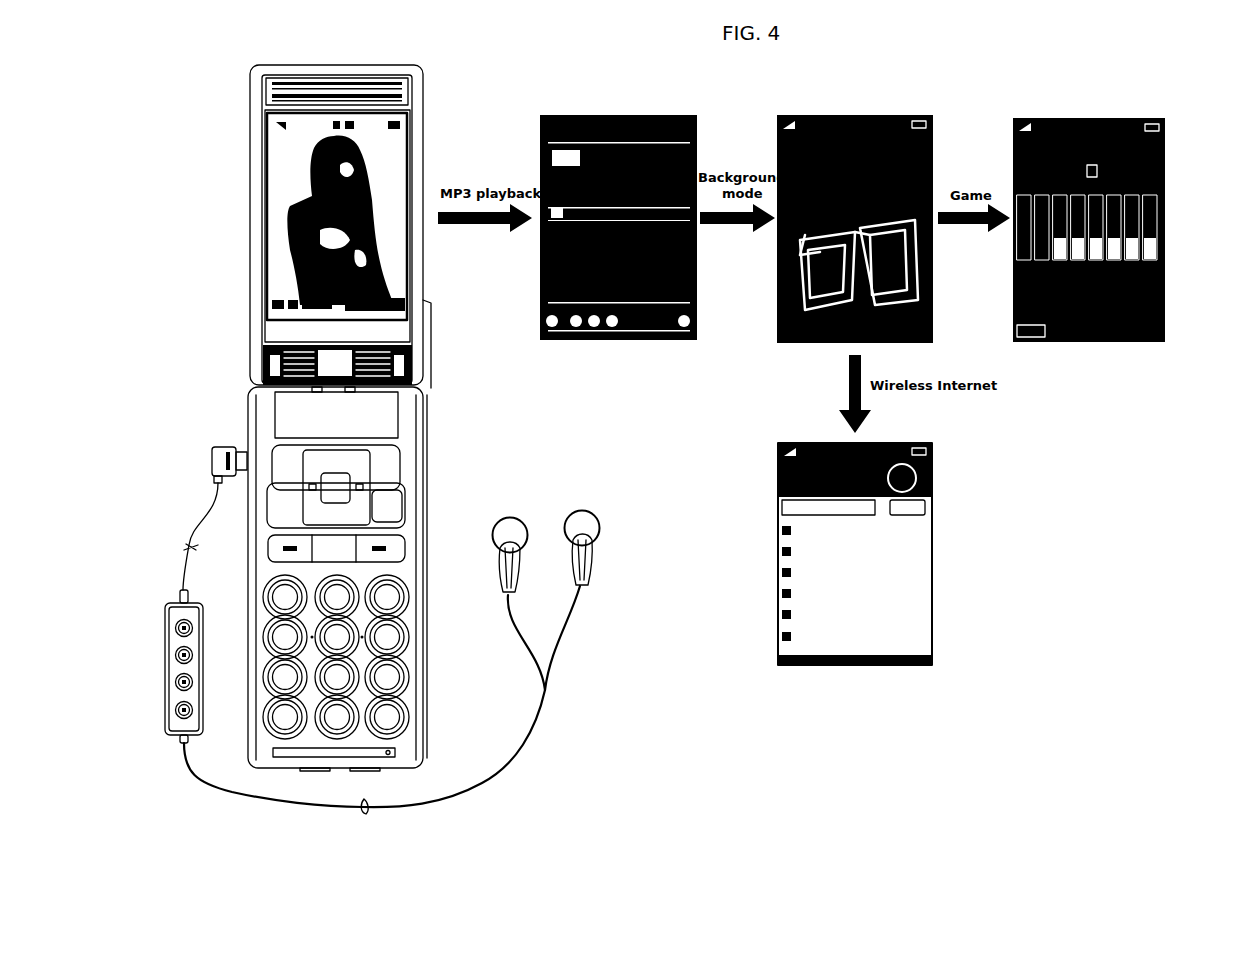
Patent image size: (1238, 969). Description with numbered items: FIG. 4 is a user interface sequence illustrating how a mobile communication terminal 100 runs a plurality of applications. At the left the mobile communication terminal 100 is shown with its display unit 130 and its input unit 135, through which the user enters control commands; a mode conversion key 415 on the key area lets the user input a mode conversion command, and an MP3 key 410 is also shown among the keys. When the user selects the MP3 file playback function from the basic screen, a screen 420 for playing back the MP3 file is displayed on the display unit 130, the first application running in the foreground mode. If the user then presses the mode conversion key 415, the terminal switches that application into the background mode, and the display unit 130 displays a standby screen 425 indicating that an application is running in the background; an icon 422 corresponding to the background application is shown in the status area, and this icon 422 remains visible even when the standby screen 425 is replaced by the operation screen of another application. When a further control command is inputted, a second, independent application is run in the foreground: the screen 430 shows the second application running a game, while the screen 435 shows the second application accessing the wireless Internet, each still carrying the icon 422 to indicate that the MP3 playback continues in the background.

The mobile communication terminal 100 is at (423, 100).
The display unit 130 is at (272, 170).
The input unit 135 is at (437, 452).
The MP3 key 410 is at (398, 497).
The mode conversion key 415 is at (249, 513).
The MP3 playback screen 420 is at (697, 262).
The icon 422 is at (920, 113).
The standby screen 425 is at (933, 255).
The screen 430 is at (1165, 265).
The screen 435 is at (915, 594).